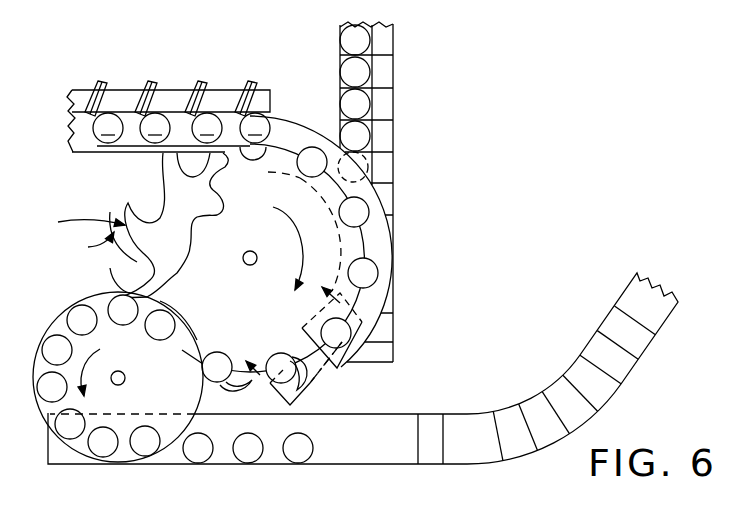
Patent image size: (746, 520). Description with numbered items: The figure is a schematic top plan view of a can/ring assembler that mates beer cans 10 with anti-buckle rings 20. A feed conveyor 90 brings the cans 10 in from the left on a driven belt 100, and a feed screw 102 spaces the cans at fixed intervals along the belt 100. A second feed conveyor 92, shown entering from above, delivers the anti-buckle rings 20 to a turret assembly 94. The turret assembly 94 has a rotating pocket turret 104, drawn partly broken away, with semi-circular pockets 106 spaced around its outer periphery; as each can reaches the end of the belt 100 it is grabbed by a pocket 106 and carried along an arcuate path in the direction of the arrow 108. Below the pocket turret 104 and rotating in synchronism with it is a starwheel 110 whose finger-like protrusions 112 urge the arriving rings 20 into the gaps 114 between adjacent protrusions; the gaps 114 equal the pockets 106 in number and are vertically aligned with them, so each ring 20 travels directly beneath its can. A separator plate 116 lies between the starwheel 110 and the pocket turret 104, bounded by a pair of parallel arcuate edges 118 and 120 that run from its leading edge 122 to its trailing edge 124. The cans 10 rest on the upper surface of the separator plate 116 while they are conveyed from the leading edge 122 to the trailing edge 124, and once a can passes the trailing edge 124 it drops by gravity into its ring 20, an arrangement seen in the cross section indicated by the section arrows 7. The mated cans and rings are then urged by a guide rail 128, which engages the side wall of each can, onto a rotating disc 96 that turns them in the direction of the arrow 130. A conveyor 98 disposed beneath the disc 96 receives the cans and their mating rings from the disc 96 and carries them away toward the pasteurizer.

The section line 7- 7 is at (287, 324).
The beer cans 10 is at (181, 128).
The anti-buckle rings 20 is at (350, 100).
The feed conveyor 90 is at (96, 153).
The feed conveyor 92 is at (390, 106).
The turret assembly 94 is at (77, 216).
The rotating disc 96 is at (62, 302).
The conveyor 98 is at (367, 465).
The driven belt 100 is at (72, 128).
The feed screw 102 is at (149, 81).
The rotating pocket turret 104 is at (238, 292).
The semi-circular pockets 106 is at (262, 172).
The arrow 108 is at (302, 246).
The starwheel 110 is at (186, 246).
The finger-like protrusions 112 is at (128, 216).
The gaps 114 is at (79, 243).
The separator plate 116 is at (385, 232).
The arcuate edge 118 is at (333, 241).
The arcuate edge 120 is at (392, 325).
The leading edge 122 is at (252, 178).
The trailing edge 124 is at (302, 330).
The guide rail 128 is at (180, 315).
The arrow 130 is at (100, 352).